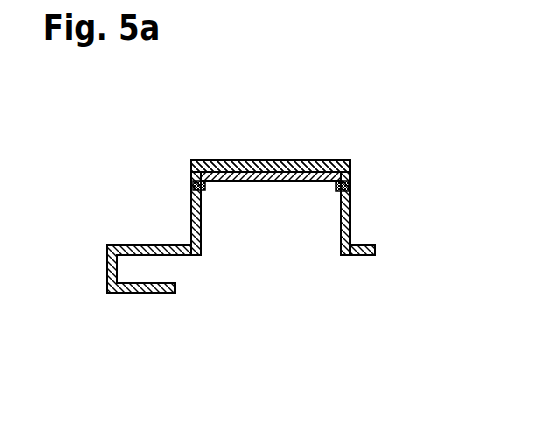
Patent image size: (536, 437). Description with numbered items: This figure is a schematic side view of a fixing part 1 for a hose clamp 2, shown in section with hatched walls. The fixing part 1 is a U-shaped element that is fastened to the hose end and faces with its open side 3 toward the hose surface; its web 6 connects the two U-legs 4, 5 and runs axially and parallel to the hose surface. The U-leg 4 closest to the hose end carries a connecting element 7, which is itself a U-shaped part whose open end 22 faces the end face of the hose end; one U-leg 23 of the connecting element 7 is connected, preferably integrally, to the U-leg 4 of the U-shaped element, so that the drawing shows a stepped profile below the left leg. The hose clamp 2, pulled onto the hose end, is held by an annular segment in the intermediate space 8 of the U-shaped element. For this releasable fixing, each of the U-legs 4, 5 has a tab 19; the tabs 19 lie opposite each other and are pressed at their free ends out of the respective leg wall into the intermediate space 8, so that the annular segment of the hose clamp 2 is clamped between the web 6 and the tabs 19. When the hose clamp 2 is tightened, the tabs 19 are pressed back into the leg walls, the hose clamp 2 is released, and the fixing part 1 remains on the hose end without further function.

The fixing part 1 is at (152, 139).
The hose clamp 2 is at (293, 175).
The open side 3 is at (306, 266).
The U-leg 4 is at (192, 226).
The U-leg 5 is at (349, 228).
The web 6 is at (251, 165).
The connecting element 7 is at (80, 314).
The intermediate space 8 is at (307, 217).
The tab 19 is at (192, 184).
The open end 22 is at (183, 272).
The U-leg 23 is at (127, 247).